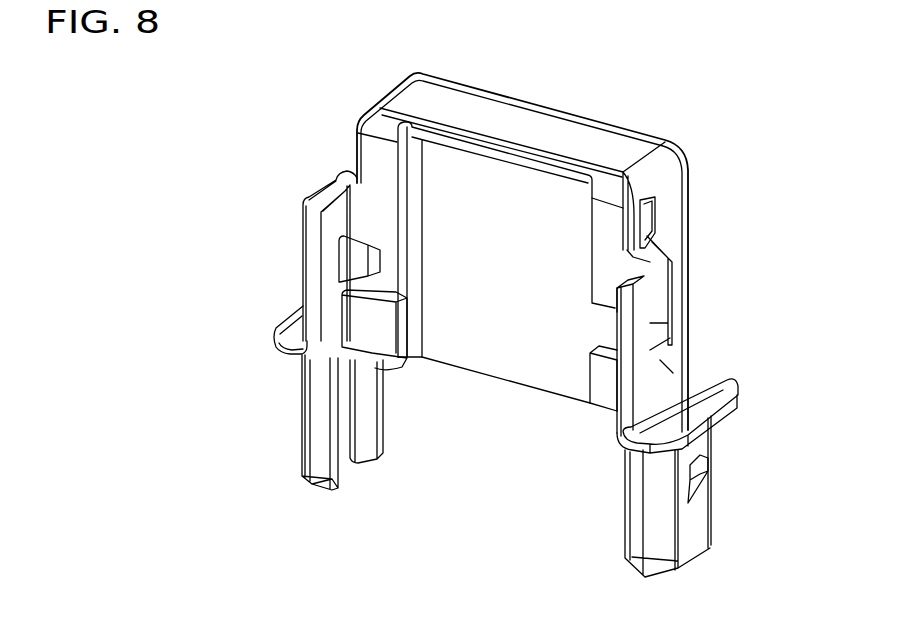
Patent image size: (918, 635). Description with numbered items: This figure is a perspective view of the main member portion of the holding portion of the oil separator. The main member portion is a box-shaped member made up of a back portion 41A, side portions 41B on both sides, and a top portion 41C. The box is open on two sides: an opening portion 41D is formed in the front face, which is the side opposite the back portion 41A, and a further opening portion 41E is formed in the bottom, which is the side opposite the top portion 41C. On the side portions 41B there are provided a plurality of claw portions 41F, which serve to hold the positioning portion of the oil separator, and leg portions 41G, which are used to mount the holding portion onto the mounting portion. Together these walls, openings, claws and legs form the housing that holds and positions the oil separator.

The back portion 41A is at (535, 220).
The side portion 41B is at (674, 237).
The top portion 41C is at (521, 117).
The opening portion 41D is at (482, 264).
The opening portion 41E is at (500, 403).
The claw portion 41F is at (377, 187).
The leg portion 41G is at (307, 437).